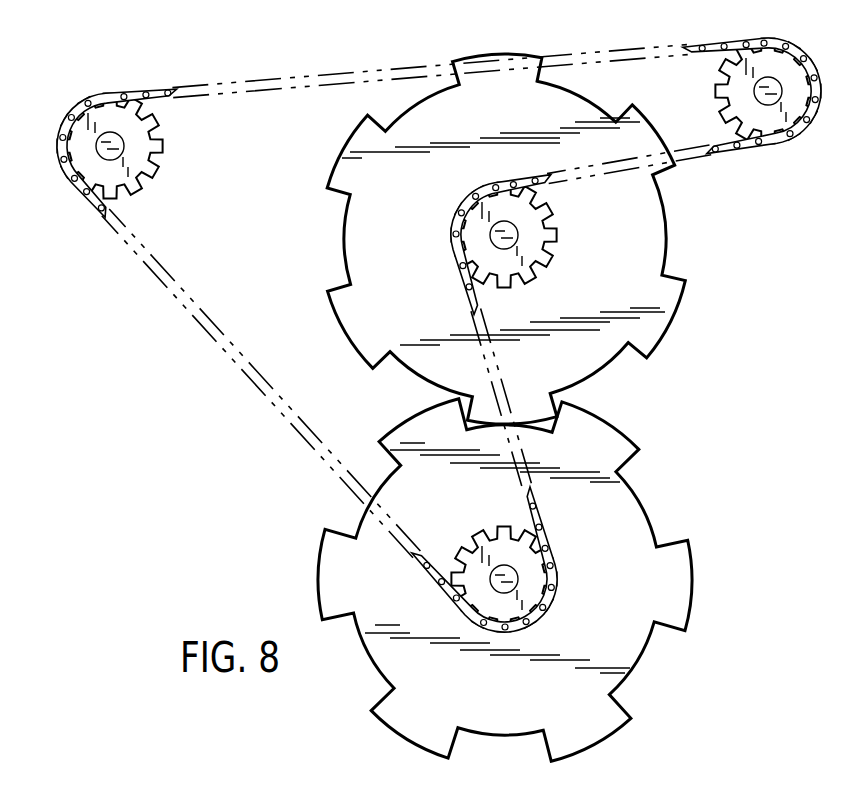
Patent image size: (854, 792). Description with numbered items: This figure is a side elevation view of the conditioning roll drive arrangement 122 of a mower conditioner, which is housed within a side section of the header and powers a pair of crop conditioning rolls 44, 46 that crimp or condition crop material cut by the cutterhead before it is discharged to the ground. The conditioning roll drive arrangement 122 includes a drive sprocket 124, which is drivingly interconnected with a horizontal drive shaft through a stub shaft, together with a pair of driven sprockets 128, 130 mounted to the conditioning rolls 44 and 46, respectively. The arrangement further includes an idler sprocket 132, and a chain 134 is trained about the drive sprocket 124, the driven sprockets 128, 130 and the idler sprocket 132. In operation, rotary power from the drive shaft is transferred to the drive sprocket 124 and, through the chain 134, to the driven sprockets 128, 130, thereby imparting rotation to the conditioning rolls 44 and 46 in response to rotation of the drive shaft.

The crop conditioning roll 44 is at (665, 230).
The crop conditioning roll 46 is at (645, 502).
The conditioning roll drive arrangement 122 is at (439, 329).
The drive sprocket 124 is at (88, 167).
The driven sprocket 128 is at (530, 253).
The driven sprocket 130 is at (472, 552).
The idler sprocket 132 is at (767, 120).
The chain 134 is at (288, 78).